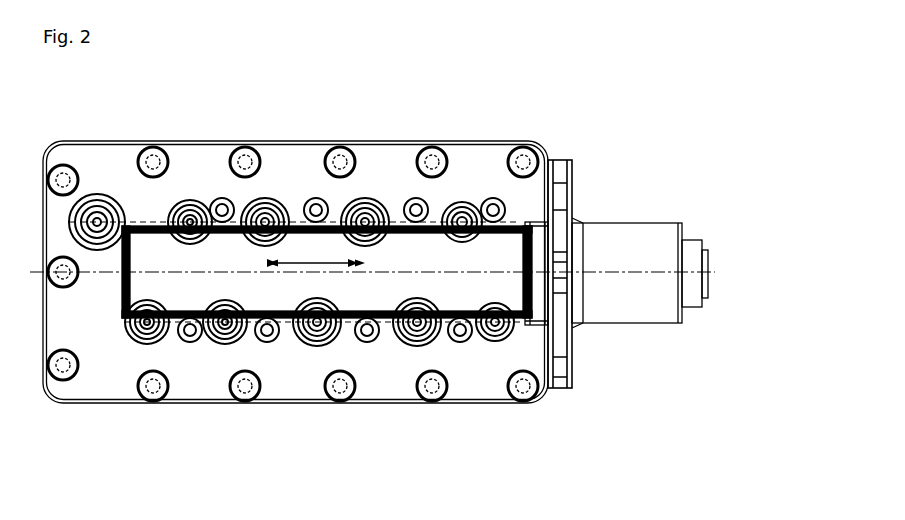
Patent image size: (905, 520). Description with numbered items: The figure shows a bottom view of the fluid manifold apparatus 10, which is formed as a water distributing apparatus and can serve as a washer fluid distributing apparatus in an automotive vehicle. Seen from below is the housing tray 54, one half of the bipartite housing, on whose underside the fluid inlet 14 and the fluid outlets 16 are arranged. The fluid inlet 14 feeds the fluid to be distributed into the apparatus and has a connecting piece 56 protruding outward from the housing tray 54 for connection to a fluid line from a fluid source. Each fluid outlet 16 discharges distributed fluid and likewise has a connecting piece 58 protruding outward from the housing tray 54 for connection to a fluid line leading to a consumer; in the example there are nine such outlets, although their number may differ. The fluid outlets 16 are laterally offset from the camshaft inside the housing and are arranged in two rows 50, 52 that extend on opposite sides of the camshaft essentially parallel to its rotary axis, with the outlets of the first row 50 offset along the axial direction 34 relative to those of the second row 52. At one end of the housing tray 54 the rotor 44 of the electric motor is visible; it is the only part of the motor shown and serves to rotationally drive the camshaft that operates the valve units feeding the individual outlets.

The fluid manifold apparatus 10 is at (553, 140).
The fluid inlet 14 is at (100, 155).
The fluid outlet 16 is at (425, 394).
The axial direction 34 is at (313, 262).
The rotor 44 is at (668, 258).
The row 50 is at (155, 224).
The row 52 is at (283, 322).
The housing tray 54 is at (90, 390).
The connecting piece 56 is at (83, 210).
The connecting piece 58 is at (412, 349).